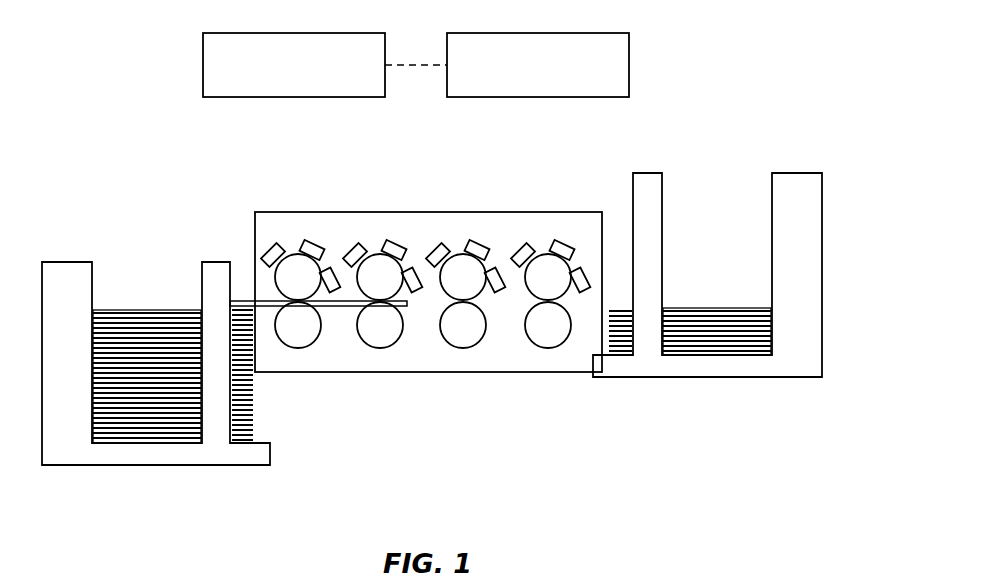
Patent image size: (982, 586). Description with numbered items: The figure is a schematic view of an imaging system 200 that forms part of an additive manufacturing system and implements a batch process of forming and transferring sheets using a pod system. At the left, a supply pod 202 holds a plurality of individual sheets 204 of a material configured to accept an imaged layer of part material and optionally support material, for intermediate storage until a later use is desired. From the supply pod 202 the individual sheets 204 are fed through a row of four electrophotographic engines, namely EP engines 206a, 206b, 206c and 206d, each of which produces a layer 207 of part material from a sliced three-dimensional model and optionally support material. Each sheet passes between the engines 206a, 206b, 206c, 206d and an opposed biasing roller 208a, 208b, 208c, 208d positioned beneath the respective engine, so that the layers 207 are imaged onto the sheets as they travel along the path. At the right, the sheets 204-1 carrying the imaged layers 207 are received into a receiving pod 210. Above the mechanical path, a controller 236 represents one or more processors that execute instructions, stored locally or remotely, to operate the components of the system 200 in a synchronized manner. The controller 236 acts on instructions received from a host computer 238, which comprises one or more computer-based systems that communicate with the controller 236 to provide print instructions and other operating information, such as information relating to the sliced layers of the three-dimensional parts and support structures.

The imaging system 200 is at (142, 112).
The supply pod 202 is at (62, 452).
The individual sheets 204 is at (150, 318).
The sheets with imaged layers 204-1 is at (728, 322).
The EP engine 206a is at (296, 256).
The EP engine 206b is at (378, 256).
The EP engine 206c is at (461, 256).
The EP engine 206d is at (546, 256).
The layer of part material 207 is at (270, 250).
The biasing roller 208a is at (300, 348).
The biasing roller 208b is at (382, 348).
The biasing roller 208c is at (465, 348).
The biasing roller 208d is at (550, 348).
The receiving pod 210 is at (812, 238).
The controller 236 is at (255, 33).
The host computer 238 is at (578, 33).